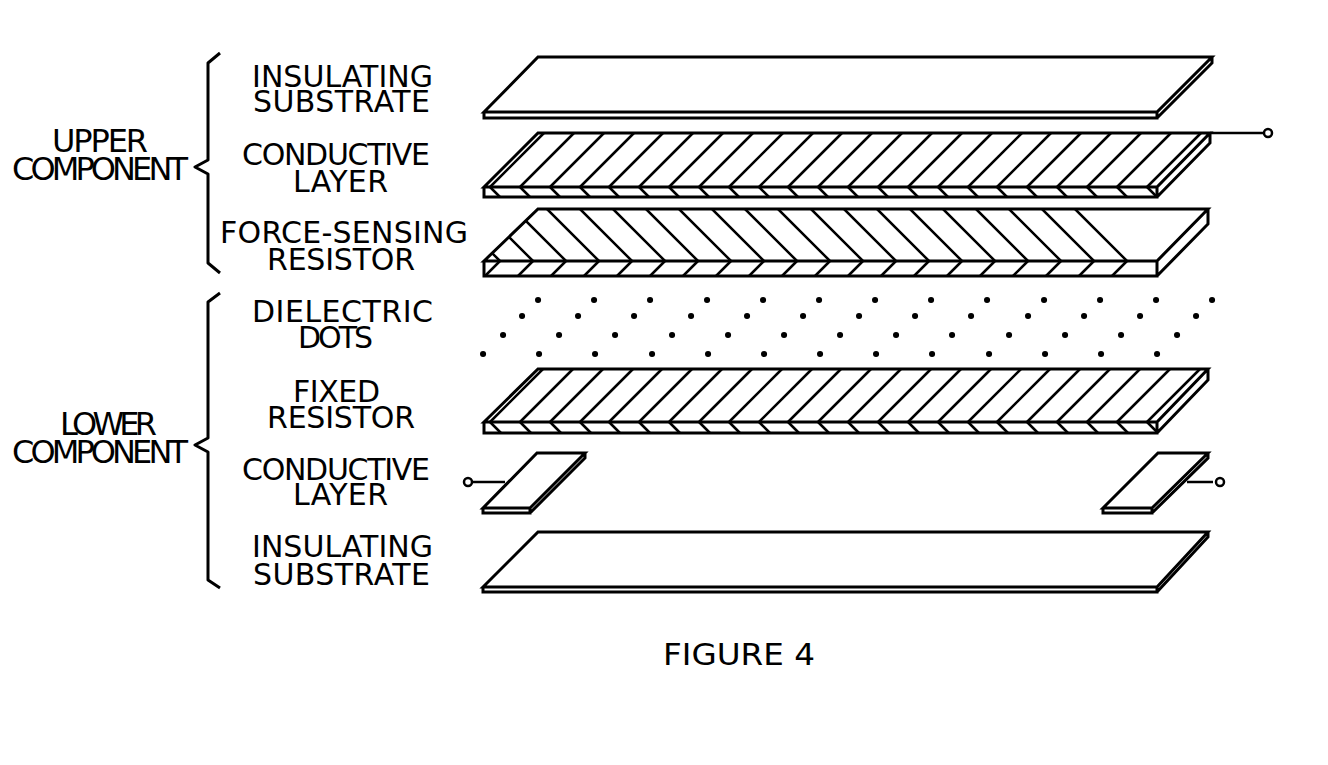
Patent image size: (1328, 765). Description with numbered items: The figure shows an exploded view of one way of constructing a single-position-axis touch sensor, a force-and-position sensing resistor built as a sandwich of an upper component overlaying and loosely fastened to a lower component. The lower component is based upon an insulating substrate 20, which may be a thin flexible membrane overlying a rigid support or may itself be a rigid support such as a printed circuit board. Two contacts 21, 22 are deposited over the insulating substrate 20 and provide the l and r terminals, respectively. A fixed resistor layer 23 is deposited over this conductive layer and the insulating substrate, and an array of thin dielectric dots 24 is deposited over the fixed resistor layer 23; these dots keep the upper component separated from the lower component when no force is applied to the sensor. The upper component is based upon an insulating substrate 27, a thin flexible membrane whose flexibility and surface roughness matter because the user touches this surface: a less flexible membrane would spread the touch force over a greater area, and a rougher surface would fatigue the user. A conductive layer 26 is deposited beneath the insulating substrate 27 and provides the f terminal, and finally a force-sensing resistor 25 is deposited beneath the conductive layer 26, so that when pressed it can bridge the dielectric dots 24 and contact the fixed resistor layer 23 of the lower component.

The insulating substrate 20 is at (1182, 550).
The contact 21 is at (548, 482).
The contact 22 is at (1133, 480).
The fixed resistor layer 23 is at (1185, 395).
The dielectric dots 24 is at (1200, 317).
The force-sensing resistor 25 is at (1187, 237).
The conductive layer 26 is at (1187, 158).
The insulating substrate 27 is at (1183, 77).
The f terminal f is at (1254, 138).
The l terminal l is at (474, 485).
The r terminal r is at (1220, 481).